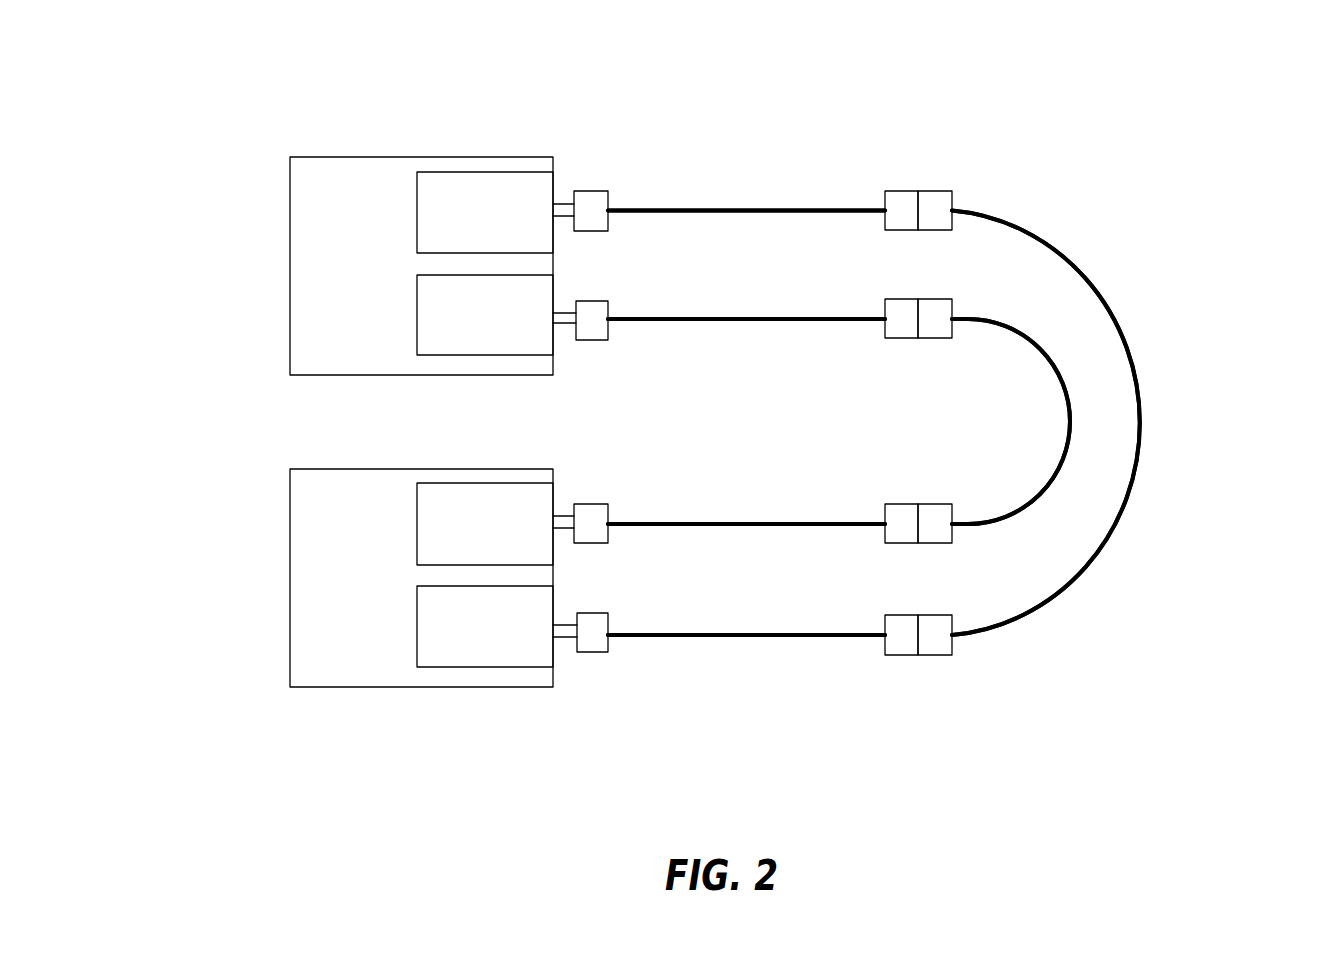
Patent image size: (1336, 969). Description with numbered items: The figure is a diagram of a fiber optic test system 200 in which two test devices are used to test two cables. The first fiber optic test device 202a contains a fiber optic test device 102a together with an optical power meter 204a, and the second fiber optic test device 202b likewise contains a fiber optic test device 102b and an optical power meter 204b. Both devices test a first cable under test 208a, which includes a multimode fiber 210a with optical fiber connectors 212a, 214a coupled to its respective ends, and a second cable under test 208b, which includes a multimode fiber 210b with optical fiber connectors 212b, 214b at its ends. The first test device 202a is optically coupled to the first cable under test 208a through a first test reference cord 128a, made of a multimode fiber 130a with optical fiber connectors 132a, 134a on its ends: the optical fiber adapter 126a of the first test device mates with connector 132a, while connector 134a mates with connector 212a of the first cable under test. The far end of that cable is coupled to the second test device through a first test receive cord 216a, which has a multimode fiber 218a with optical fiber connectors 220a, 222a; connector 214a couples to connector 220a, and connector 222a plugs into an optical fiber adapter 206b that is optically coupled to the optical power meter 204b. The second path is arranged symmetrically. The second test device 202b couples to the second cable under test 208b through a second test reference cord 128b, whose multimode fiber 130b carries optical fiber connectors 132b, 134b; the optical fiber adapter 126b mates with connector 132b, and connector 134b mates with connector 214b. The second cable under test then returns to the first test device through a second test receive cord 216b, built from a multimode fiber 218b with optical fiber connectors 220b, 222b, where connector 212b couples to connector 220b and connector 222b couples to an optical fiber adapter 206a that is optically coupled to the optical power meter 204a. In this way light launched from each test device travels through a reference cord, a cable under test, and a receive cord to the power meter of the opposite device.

The fiber optic test system 200 is at (842, 53).
The first fiber optic test device 202a is at (307, 272).
The second fiber optic test device 202b is at (307, 582).
The fiber optic test device 102a is at (431, 212).
The fiber optic test device 102b is at (431, 522).
The optical power meter 204a is at (429, 315).
The optical power meter 204b is at (429, 626).
The optical fiber adapter 126a is at (563, 210).
The optical fiber adapter 126b is at (563, 522).
The optical fiber connector 132a is at (590, 218).
The optical fiber connector 132b is at (590, 530).
The first test reference cord 128a is at (735, 200).
The second test reference cord 128b is at (737, 514).
The multimode fiber 130a is at (750, 213).
The multimode fiber 130b is at (683, 521).
The optical fiber connector 134a is at (901, 220).
The optical fiber connector 134b is at (893, 513).
The optical fiber connector 212a is at (940, 203).
The optical fiber connector 212b is at (940, 318).
The optical fiber adapter 206a is at (563, 321).
The optical fiber adapter 206b is at (563, 636).
The optical fiber connector 222a is at (598, 645).
The optical fiber connector 222b is at (598, 333).
The first test receive cord 216a is at (737, 624).
The second test receive cord 216b is at (737, 309).
The multimode fiber 218a is at (755, 640).
The multimode fiber 218b is at (752, 322).
The optical fiber connector 220a is at (902, 627).
The optical fiber connector 220b is at (902, 330).
The optical fiber connector 214a is at (937, 660).
The optical fiber connector 214b is at (940, 513).
The first cable under test 208a is at (1144, 342).
The second cable under test 208b is at (1009, 324).
The multimode fiber 210a is at (1158, 402).
The multimode fiber 210b is at (1052, 368).